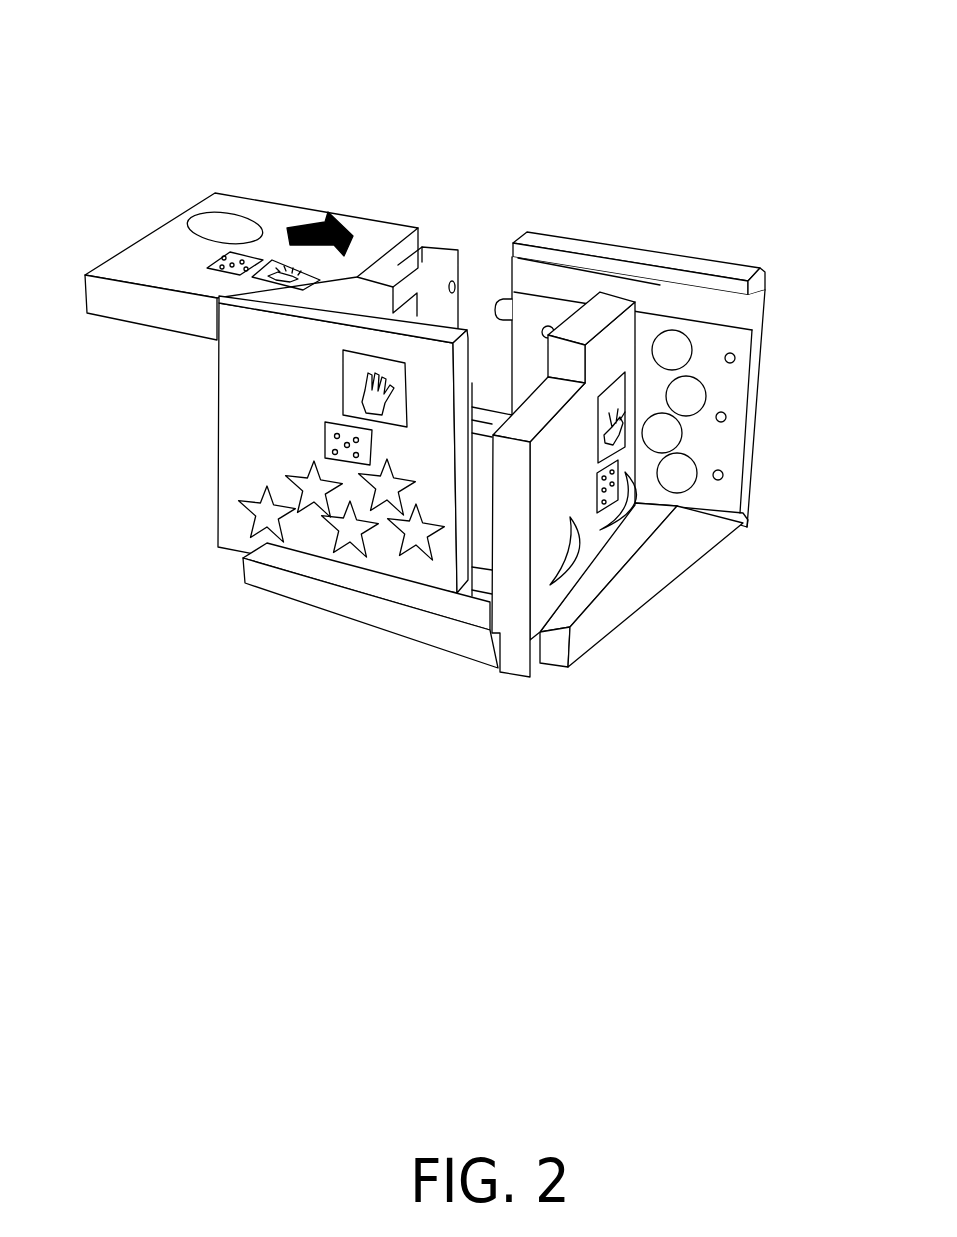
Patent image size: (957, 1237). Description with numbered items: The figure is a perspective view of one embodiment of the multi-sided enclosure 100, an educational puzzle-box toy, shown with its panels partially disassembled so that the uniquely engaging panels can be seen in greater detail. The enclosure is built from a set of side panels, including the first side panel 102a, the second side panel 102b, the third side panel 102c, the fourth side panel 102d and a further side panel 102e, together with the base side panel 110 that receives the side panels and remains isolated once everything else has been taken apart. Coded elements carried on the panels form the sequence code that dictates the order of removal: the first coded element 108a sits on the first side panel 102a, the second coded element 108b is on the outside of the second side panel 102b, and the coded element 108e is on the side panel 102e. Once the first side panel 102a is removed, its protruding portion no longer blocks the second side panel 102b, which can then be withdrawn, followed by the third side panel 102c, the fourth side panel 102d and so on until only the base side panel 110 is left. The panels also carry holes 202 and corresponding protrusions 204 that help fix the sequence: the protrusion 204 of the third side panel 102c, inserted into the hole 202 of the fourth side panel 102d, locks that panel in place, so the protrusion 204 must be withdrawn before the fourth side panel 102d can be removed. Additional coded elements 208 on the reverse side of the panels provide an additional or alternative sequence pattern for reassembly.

The multi-sided enclosure 100 is at (80, 60).
The first side panel 102a is at (275, 200).
The second side panel 102b is at (512, 607).
The third side panel 102c is at (540, 232).
The fourth side panel 102d is at (440, 248).
The side panel 102e is at (228, 367).
The first coded element 108a is at (318, 218).
The second coded element 108b is at (592, 494).
The coded element 108e is at (230, 432).
The base side panel 110 is at (288, 585).
The hole 202 is at (457, 287).
The protrusion 204 is at (551, 327).
The additional coded element 208 is at (516, 310).